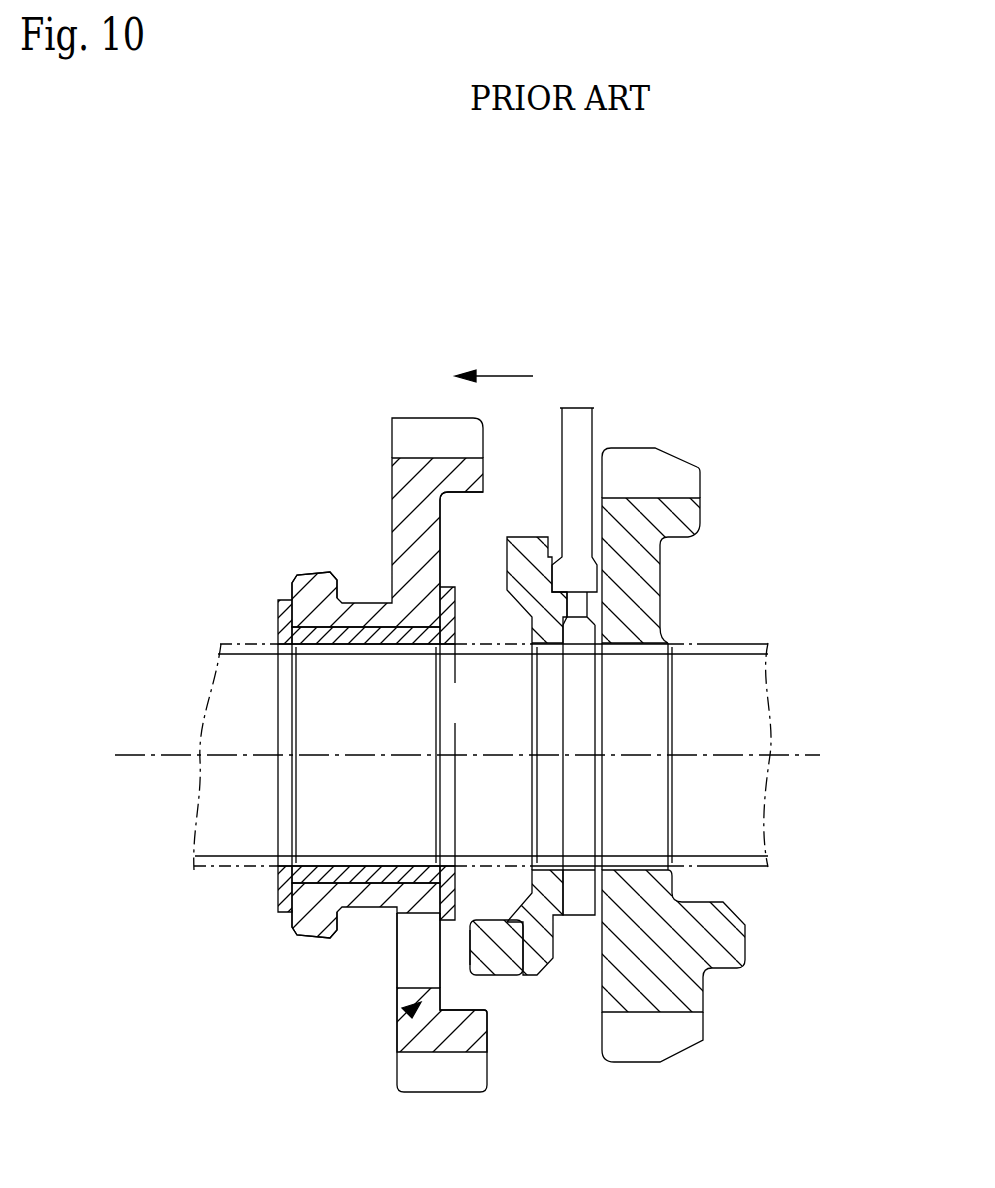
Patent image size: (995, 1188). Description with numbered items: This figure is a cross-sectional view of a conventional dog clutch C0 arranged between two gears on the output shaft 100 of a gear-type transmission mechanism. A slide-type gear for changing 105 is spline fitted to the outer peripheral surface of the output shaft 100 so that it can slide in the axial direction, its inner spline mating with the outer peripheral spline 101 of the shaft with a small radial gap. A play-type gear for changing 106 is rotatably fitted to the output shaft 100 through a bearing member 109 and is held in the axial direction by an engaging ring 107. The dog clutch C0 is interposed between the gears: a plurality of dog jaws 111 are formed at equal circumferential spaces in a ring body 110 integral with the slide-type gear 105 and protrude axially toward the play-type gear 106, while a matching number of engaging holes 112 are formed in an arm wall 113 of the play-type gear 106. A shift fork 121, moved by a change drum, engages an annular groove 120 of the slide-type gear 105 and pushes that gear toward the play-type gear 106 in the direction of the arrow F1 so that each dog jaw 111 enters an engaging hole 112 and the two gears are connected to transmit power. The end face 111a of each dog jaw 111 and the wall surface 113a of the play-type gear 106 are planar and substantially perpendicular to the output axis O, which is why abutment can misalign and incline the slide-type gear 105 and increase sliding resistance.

The output shaft 100 is at (745, 805).
The outer peripheral spline 101 is at (718, 642).
The slide-type gear for changing 105 is at (685, 517).
The play-type gear for changing 106 is at (402, 440).
The engaging ring 107 is at (280, 610).
The bearing member 109 is at (322, 572).
The ring body 110 is at (540, 948).
The dog jaw 111 is at (489, 963).
The end face 111a is at (470, 955).
The engaging hole 112 is at (412, 957).
The arm wall 113 is at (410, 525).
The wall surface 113a is at (442, 553).
The annular groove 120 is at (578, 917).
The shift fork 121 is at (583, 433).
The output axis O is at (332, 760).
The dog clutch C0 is at (412, 1008).
The arrow F1 is at (494, 356).